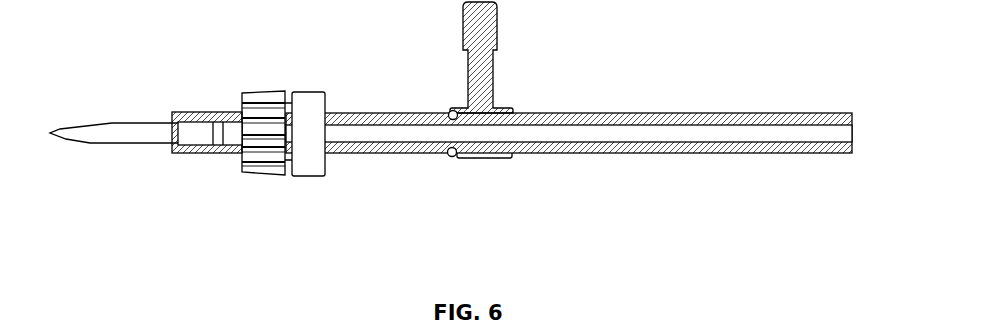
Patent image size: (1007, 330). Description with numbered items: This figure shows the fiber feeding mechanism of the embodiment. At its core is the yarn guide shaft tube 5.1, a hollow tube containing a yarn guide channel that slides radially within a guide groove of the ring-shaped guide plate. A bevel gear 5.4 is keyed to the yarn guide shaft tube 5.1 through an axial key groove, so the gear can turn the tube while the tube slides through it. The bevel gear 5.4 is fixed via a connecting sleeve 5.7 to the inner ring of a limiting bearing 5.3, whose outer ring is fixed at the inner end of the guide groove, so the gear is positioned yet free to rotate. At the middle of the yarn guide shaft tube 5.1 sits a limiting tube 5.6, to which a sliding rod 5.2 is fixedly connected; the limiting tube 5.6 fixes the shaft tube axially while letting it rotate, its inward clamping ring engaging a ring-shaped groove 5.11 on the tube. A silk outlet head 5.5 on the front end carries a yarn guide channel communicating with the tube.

The yarn guide shaft tube 5.1 is at (628, 142).
The sliding rod 5.2 is at (487, 65).
The limiting bearing 5.3 is at (317, 105).
The bevel gear 5.4 is at (262, 102).
The silk outlet head 5.5 is at (127, 127).
The limiting tube 5.6 is at (450, 157).
The connecting sleeve 5.7 is at (284, 160).
The ring-shaped groove 5.11 is at (450, 113).